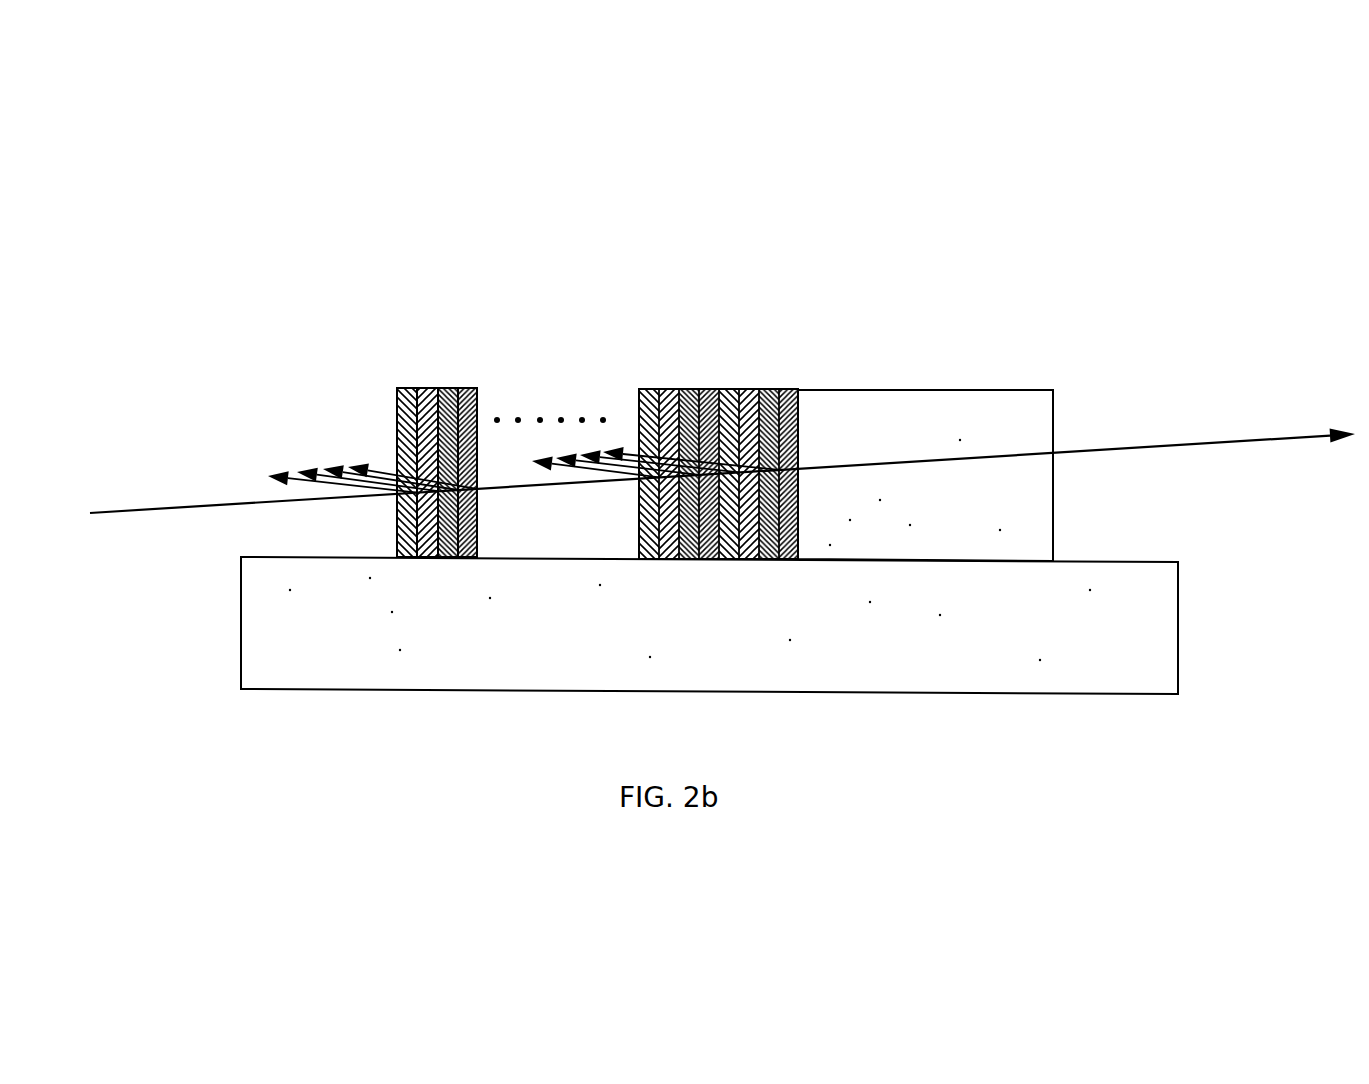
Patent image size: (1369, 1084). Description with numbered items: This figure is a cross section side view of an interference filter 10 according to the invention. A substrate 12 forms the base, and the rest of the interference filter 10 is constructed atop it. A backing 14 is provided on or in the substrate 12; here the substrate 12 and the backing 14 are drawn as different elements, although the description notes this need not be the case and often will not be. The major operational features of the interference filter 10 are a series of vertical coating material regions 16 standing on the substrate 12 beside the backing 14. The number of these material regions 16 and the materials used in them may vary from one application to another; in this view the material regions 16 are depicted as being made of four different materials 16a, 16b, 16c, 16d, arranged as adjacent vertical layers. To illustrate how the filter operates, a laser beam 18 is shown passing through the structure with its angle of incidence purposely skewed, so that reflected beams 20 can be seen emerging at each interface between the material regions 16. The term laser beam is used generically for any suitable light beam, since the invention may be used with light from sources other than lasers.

The interference filter 10 is at (1187, 246).
The substrate 12 is at (241, 623).
The backing 14 is at (1008, 413).
The vertical coating material regions 16 is at (683, 361).
The first material 16a is at (408, 388).
The second material 16b is at (428, 388).
The third material 16c is at (448, 388).
The fourth material 16d is at (468, 388).
The laser beam 18 is at (135, 510).
The reflected beams 20 is at (304, 430).